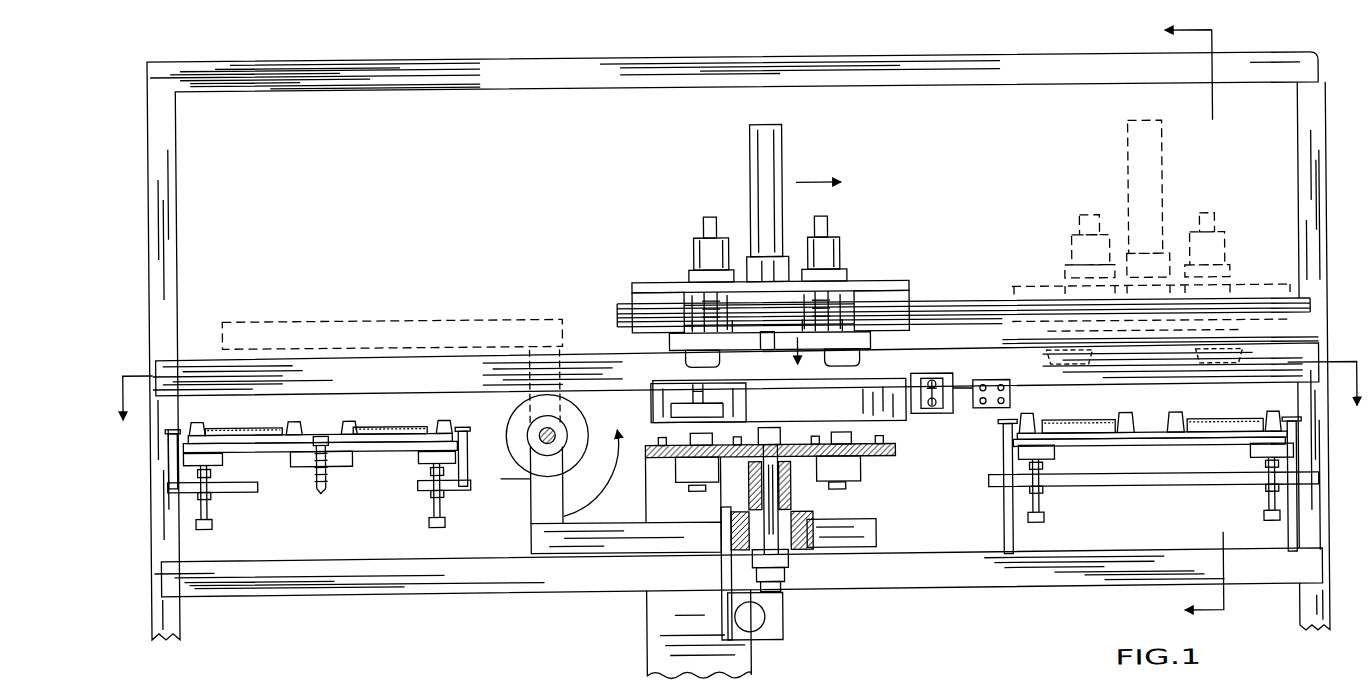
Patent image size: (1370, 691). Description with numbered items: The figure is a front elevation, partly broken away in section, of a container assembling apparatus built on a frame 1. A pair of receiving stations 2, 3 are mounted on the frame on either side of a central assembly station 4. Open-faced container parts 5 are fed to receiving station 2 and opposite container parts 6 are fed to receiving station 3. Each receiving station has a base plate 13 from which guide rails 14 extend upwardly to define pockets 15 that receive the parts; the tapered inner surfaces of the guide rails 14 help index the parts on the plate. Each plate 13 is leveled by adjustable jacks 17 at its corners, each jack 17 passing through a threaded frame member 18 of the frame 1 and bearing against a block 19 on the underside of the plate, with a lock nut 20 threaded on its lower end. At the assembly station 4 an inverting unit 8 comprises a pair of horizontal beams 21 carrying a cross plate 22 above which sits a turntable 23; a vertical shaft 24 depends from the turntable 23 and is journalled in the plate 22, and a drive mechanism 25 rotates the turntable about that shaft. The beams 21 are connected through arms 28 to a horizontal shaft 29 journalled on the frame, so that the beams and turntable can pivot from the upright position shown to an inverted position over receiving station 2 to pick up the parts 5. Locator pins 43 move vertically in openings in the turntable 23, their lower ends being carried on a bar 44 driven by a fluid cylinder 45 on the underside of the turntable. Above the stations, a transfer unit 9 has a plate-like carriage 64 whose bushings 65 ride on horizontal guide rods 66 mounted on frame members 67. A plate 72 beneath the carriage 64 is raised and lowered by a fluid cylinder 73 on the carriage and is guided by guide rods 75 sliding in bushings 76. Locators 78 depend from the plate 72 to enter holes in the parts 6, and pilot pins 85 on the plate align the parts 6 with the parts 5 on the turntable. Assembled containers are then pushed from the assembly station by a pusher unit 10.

The frame 1 is at (285, 598).
The receiving station 2 is at (362, 472).
The receiving station 3 is at (1135, 530).
The assembly station 4 is at (880, 522).
The container parts 5 is at (263, 429).
The container parts 6 is at (1095, 429).
The inverting unit 8 is at (618, 536).
The transfer unit 9 is at (908, 290).
The pusher unit 10 is at (908, 426).
The base plate 13 is at (270, 454).
The guide rails 14 is at (196, 424).
The pockets 15 is at (292, 422).
The adjustable jacks 17 is at (196, 506).
The threaded frame member 18 is at (170, 498).
The block 19 is at (185, 460).
The lock nut 20 is at (208, 498).
The horizontal beams 21 is at (560, 545).
The cross plate 22 is at (808, 545).
The turntable 23 is at (895, 458).
The vertical shaft 24 is at (790, 486).
The drive mechanism 25 is at (772, 622).
The arms 28 is at (560, 515).
The horizontal shaft 29 is at (552, 436).
The locator pins 43 is at (830, 440).
The bar 44 is at (650, 505).
The fluid cylinder 45 is at (680, 472).
The carriage 64 is at (650, 290).
The bushings 65 is at (640, 302).
The guide rods 66 is at (618, 314).
The frame members 67 is at (618, 329).
The plate 72 is at (860, 345).
The fluid cylinder 73 is at (783, 140).
The guide rods 75 is at (706, 222).
The bushings 76 is at (692, 250).
The locators 78 is at (684, 364).
The pilot pins 85 is at (762, 356).